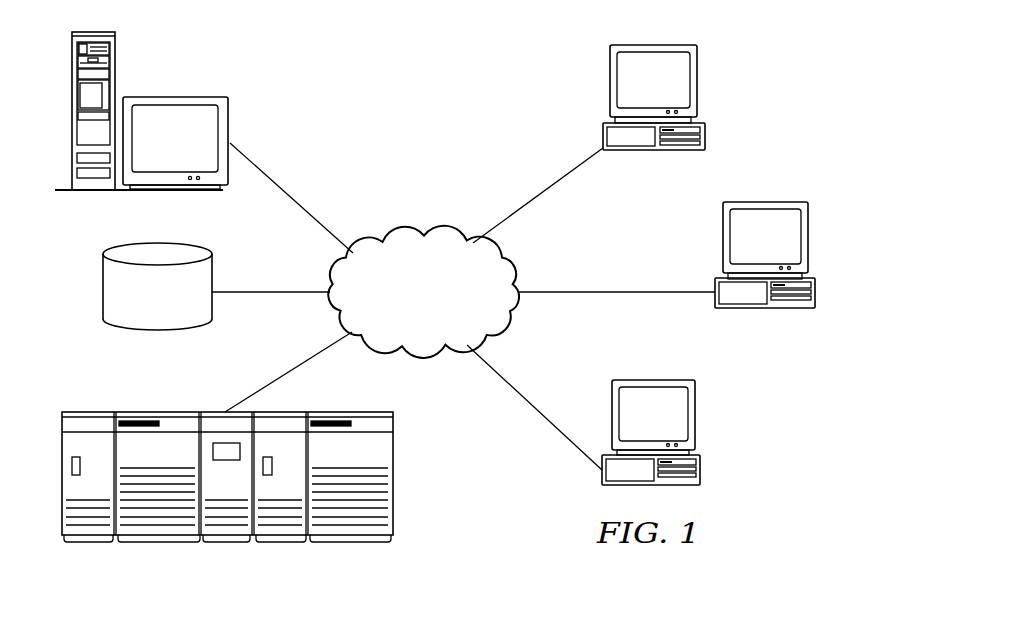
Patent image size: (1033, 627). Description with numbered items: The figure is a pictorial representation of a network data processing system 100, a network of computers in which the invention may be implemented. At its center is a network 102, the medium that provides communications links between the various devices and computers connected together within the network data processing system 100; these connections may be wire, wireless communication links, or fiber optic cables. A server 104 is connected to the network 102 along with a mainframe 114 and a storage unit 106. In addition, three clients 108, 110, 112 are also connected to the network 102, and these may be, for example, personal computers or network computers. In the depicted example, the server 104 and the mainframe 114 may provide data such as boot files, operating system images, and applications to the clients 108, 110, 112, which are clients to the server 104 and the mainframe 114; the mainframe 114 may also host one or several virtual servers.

The network data processing system 100 is at (295, 86).
The network 102 is at (444, 306).
The server 104 is at (72, 102).
The storage unit 106 is at (103, 285).
The client 108 is at (697, 90).
The client 110 is at (808, 242).
The client 112 is at (695, 420).
The mainframe 114 is at (175, 412).